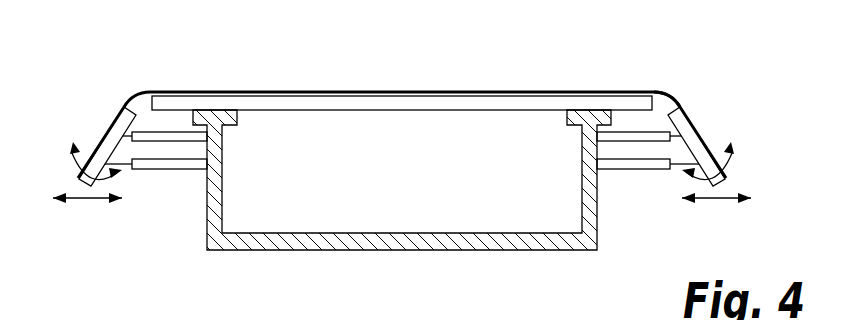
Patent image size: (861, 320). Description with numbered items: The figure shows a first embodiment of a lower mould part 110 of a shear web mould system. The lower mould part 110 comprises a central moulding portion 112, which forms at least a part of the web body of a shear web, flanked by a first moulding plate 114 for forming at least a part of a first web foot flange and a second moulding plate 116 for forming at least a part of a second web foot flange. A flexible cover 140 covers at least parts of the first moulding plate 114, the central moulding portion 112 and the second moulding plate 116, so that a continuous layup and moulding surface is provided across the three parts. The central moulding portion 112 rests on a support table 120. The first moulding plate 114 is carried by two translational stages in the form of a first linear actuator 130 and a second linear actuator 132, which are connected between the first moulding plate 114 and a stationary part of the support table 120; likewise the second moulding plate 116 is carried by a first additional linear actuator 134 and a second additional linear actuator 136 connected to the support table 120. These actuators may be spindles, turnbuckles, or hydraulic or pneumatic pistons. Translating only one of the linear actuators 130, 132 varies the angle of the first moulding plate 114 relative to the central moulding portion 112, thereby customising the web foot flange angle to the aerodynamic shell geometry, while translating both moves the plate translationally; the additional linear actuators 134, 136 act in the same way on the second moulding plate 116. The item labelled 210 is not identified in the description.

The lower mould part 110 is at (390, 53).
The central moulding portion 112 is at (425, 103).
The first moulding plate 114 is at (117, 127).
The second moulding plate 116 is at (683, 123).
The support table 120 is at (598, 235).
The first linear actuator 130 is at (154, 142).
The second linear actuator 132 is at (175, 170).
The first additional linear actuator 134 is at (599, 170).
The second additional linear actuator 136 is at (662, 170).
The flexible cover 140 is at (667, 93).
The mounting surface 210 is at (417, 310).